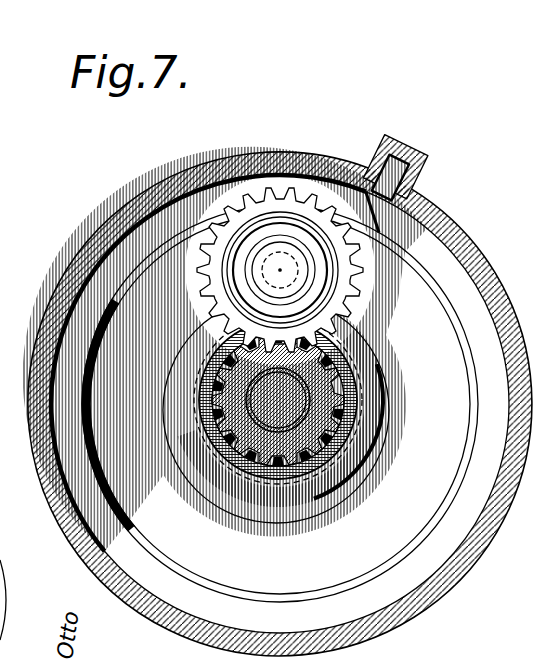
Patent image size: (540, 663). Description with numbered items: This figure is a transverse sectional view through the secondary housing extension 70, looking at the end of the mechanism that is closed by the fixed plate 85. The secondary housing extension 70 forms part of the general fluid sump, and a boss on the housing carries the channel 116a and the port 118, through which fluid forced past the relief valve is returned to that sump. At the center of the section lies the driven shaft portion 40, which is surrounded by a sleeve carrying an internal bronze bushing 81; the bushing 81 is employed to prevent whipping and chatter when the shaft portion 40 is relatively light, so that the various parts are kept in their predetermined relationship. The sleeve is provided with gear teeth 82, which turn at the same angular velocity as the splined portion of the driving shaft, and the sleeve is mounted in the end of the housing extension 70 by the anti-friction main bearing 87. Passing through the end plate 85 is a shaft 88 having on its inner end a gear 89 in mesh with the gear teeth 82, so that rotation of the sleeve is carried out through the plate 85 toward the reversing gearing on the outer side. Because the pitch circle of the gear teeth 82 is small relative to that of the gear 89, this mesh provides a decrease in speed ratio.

The secondary housing extension 70 is at (452, 240).
The channel 116a is at (412, 136).
The port 118 is at (385, 188).
The shaft 88 is at (304, 270).
The gear 89 is at (337, 300).
The shaft portion 40 is at (342, 387).
The anti-friction main bearing 87 is at (345, 417).
The bronze bushing 81 is at (247, 431).
The gear teeth 82 is at (247, 446).
The fixed plate 85 is at (250, 374).